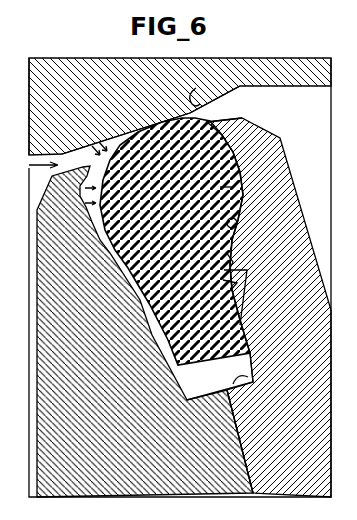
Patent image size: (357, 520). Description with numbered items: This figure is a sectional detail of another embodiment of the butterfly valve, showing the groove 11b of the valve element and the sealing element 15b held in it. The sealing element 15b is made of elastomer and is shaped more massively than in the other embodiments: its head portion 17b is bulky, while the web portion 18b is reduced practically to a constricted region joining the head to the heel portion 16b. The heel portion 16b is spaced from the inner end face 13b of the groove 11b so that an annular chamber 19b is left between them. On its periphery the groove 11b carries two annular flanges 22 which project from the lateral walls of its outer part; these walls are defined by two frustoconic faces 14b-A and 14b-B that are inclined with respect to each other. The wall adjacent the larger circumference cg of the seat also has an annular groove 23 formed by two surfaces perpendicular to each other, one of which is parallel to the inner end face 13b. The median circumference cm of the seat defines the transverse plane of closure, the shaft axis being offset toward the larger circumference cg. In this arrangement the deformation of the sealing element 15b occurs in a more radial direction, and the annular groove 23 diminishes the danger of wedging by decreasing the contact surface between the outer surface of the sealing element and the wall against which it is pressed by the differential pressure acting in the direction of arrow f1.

The groove 11b is at (83, 127).
The sealing element 15b is at (110, 130).
The annular flanges 22 is at (245, 104).
The larger circumference of the seat cg is at (201, 86).
The median circumference of the seat cm is at (151, 127).
The frustoconic face 14b-A is at (282, 142).
The frustoconic face 14b-B is at (238, 224).
The head portion 17b is at (232, 187).
The annular groove 23 is at (227, 258).
The web portion 18b is at (234, 284).
The heel portion 16b is at (245, 312).
The annular chamber 19b is at (257, 359).
The inner end face of the groove 13b is at (252, 390).
The direction of differential pressure f1 is at (39, 177).